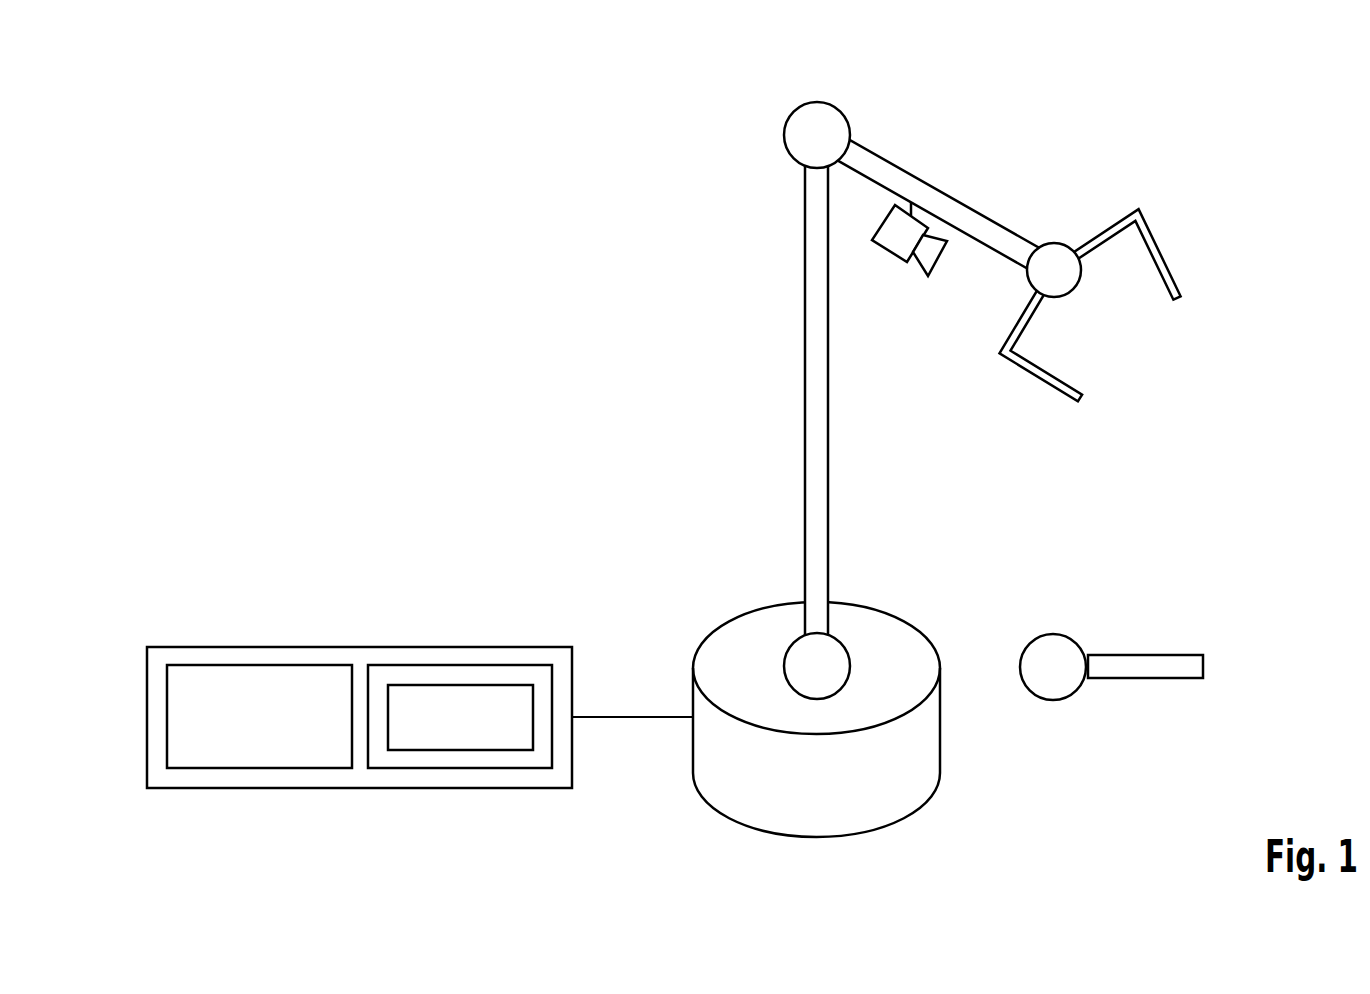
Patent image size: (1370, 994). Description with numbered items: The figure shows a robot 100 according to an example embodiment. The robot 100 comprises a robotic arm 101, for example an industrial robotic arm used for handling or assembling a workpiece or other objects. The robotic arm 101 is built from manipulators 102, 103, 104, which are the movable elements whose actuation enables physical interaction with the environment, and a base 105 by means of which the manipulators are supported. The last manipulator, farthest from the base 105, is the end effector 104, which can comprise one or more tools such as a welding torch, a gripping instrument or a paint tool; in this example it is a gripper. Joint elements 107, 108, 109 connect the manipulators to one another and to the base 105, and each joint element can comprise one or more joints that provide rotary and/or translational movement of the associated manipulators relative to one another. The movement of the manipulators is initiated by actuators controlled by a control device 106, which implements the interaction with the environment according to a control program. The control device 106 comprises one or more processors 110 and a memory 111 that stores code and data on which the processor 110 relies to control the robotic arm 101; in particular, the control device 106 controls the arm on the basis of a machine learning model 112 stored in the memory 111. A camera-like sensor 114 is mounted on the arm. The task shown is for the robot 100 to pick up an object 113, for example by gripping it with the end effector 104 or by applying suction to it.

The robot 100 is at (1196, 142).
The robotic arm 101 is at (768, 330).
The manipulator 102 is at (805, 443).
The manipulator 103 is at (941, 200).
The end effector 104 is at (1160, 260).
The base 105 is at (928, 735).
The control device 106 is at (360, 647).
The joint element 107 is at (800, 655).
The joint element 108 is at (792, 138).
The joint element 109 is at (1048, 255).
The processor 110 is at (280, 664).
The memory 111 is at (445, 665).
The machine learning model 112 is at (494, 685).
The object 113 is at (1145, 655).
The camera 114 is at (889, 253).